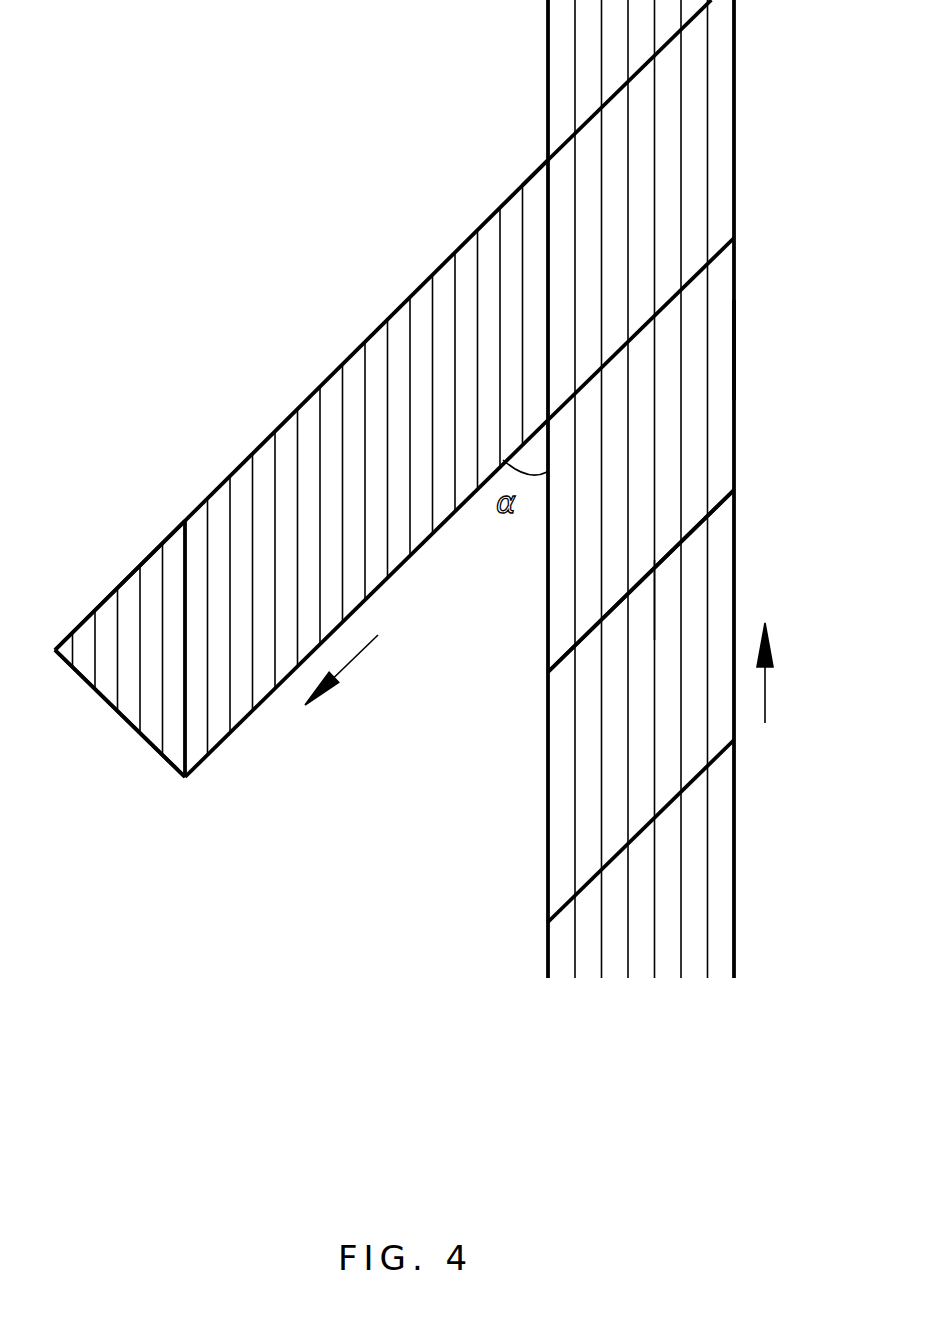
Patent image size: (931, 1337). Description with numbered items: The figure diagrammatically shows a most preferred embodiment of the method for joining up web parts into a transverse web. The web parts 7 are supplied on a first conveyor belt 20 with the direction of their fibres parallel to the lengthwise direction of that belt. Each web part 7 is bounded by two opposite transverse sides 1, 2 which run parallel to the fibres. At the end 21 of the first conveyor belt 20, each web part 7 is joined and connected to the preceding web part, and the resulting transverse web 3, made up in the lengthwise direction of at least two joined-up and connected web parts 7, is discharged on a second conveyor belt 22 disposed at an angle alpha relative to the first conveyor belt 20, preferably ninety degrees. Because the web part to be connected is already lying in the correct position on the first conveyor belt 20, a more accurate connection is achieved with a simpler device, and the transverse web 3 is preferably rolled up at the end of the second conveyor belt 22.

The transverse side 1 is at (547, 577).
The transverse side 2 is at (737, 345).
The transverse web 3 is at (308, 397).
The web part 7 is at (697, 597).
The first conveyor belt 20 is at (745, 485).
The end of the first conveyor belt 21 is at (547, 200).
The second conveyor belt 22 is at (80, 580).